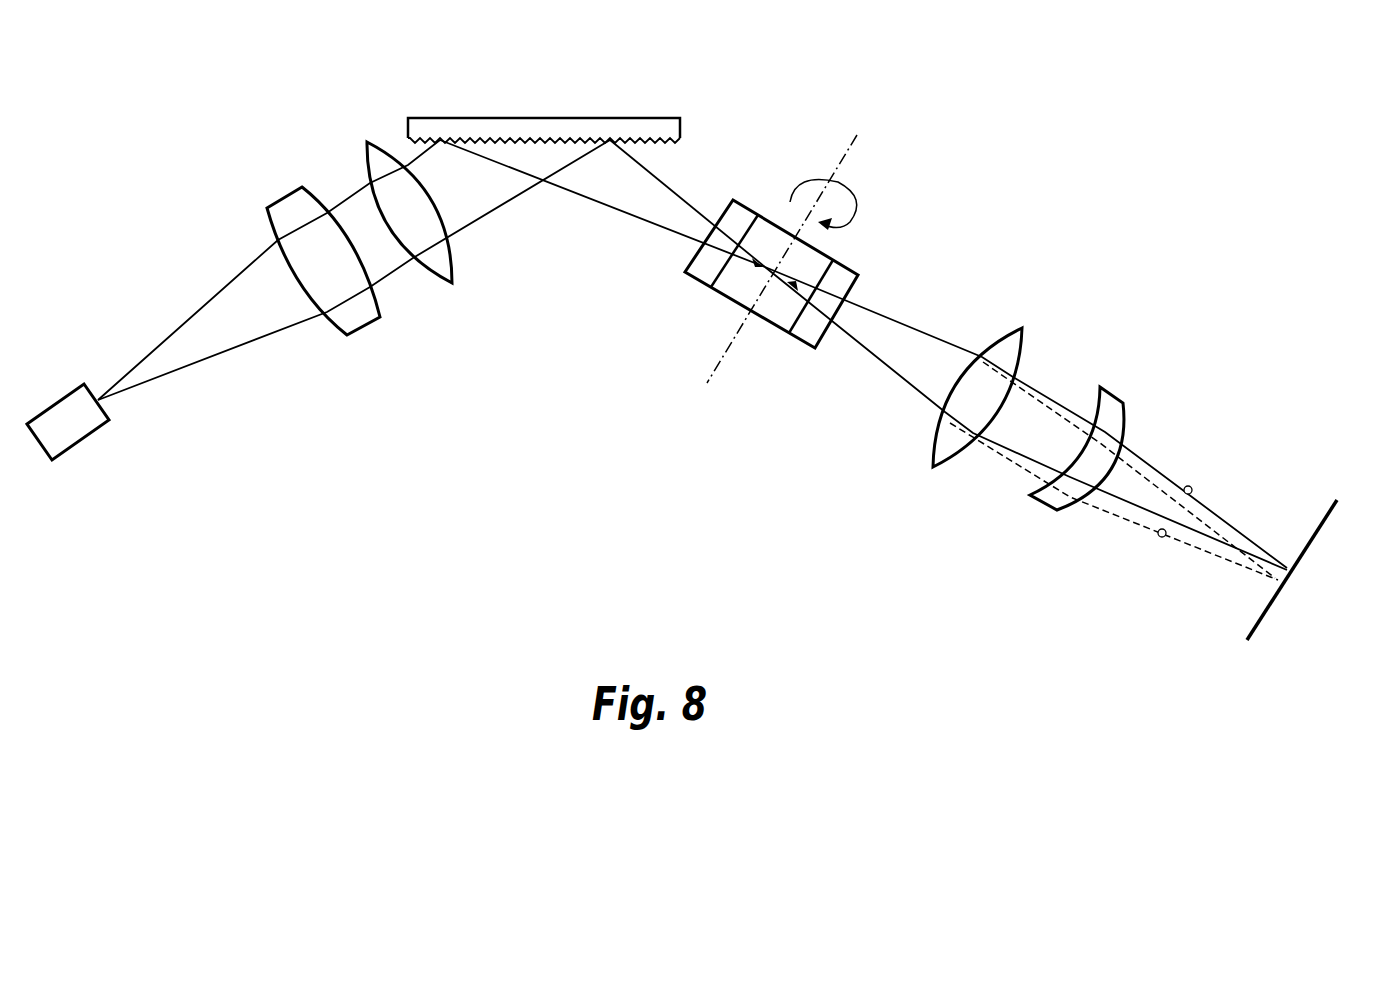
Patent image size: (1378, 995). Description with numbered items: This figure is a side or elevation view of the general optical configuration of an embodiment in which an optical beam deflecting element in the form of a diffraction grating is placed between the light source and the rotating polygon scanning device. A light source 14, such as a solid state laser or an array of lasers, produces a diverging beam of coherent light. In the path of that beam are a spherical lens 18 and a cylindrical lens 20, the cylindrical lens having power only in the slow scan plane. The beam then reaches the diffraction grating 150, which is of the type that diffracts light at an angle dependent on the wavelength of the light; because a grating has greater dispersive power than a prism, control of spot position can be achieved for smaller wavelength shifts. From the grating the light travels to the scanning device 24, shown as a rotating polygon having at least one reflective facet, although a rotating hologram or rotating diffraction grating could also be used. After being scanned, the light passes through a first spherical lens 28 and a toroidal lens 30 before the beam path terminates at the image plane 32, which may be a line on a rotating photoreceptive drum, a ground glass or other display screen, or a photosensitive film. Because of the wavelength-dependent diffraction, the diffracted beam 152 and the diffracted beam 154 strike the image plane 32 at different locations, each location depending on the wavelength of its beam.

The light source 14 is at (78, 440).
The spherical lens 18 is at (285, 203).
The cylindrical lens 20 is at (365, 142).
The diffraction grating 150 is at (603, 117).
The scanning device 24 is at (850, 265).
The first spherical lens 28 is at (1020, 328).
The toroidal lens 30 is at (1118, 400).
The diffracted beam 152 is at (1192, 485).
The diffracted beam 154 is at (1160, 537).
The image plane 32 is at (1267, 610).